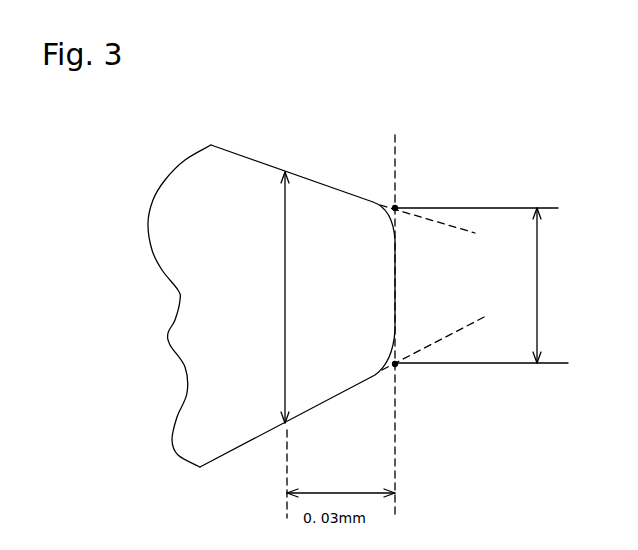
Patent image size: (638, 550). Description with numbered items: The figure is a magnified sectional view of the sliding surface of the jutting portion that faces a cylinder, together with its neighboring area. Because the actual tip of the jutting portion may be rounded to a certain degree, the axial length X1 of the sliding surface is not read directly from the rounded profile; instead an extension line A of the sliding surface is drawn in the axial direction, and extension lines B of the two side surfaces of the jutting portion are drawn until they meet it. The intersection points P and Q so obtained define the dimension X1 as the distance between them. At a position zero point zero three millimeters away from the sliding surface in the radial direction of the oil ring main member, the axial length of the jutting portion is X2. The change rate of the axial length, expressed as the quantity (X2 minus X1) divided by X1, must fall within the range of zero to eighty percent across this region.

The extension line of the sliding surface A is at (395, 318).
The intersection point P is at (397, 208).
The intersection point Q is at (397, 365).
The extension lines of the side surfaces B is at (443, 287).
The axial length of the sliding surface X1 is at (554, 285).
The axial length of the jutting portion X2 is at (262, 297).